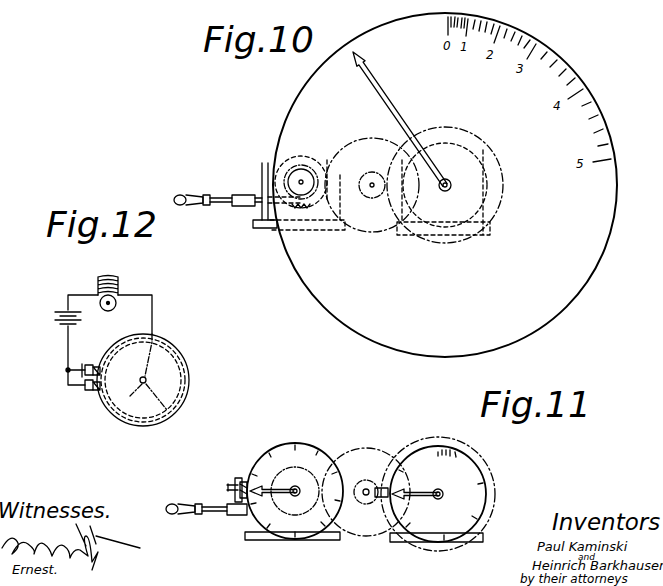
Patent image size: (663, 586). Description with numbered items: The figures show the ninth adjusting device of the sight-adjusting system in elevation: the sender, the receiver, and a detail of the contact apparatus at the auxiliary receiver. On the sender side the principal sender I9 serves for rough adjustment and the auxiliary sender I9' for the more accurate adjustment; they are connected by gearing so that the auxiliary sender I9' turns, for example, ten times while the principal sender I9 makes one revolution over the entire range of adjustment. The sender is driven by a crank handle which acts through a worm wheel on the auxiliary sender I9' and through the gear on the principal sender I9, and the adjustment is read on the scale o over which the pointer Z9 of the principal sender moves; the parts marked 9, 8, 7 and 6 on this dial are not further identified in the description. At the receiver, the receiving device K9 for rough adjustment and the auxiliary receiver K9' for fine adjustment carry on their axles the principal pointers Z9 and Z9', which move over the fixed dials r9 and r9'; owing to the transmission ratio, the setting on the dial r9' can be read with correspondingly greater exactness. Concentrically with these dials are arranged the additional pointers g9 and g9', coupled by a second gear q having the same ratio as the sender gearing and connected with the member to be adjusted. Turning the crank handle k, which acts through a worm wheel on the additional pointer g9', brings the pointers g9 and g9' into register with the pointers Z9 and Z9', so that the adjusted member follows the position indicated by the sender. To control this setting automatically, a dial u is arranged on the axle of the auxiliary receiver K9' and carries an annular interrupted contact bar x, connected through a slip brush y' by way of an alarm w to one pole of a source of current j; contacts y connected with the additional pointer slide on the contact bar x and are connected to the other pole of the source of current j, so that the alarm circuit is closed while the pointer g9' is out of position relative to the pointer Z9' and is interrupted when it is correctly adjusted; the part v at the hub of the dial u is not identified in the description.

In FIG. 10, the pinion gear on crank shaft 9 is at (296, 112).
In FIG. 10, the crank handle k is at (215, 190).
In FIG. 11, the crank handle k is at (206, 499).
In FIG. 10, the auxiliary sender I9' is at (294, 209).
In FIG. 10, the principal sender I9 is at (453, 185).
In FIG. 10, the principal pointer Z9 is at (402, 121).
In FIG. 11, the principal pointer Z9 is at (417, 531).
In FIG. 10, the dial plate 8 is at (317, 290).
In FIG. 10, the dial lower part 7 is at (460, 351).
In FIG. 10, the dial rim 6 is at (586, 273).
In FIG. 10, the scale o is at (600, 225).
In FIG. 12, the dial u is at (186, 356).
In FIG. 12, the annular interrupted contact bar x is at (180, 372).
In FIG. 12, the slip brush y' is at (139, 372).
In FIG. 12, the disk hub v is at (140, 386).
In FIG. 12, the source of current j is at (54, 318).
In FIG. 12, the alarm w is at (116, 302).
In FIG. 12, the additional pointer g9' is at (79, 391).
In FIG. 11, the additional pointer g9' is at (225, 487).
In FIG. 12, the contacts y is at (97, 351).
In FIG. 11, the fixed dial r9' is at (295, 484).
In FIG. 11, the principal pointer Z9' is at (281, 458).
In FIG. 11, the auxiliary receiver K9' is at (289, 548).
In FIG. 11, the second gear q is at (406, 452).
In FIG. 11, the additional pointer g9 is at (367, 522).
In FIG. 11, the fixed dial r9 is at (451, 494).
In FIG. 11, the receiver K9 is at (455, 545).